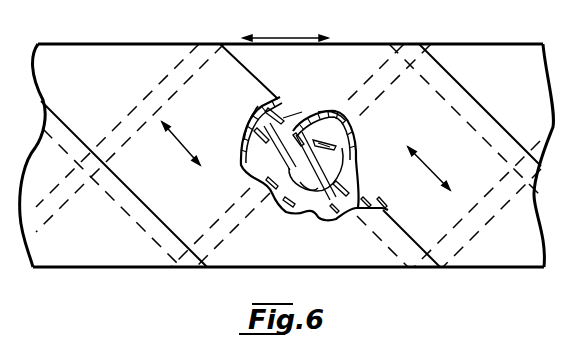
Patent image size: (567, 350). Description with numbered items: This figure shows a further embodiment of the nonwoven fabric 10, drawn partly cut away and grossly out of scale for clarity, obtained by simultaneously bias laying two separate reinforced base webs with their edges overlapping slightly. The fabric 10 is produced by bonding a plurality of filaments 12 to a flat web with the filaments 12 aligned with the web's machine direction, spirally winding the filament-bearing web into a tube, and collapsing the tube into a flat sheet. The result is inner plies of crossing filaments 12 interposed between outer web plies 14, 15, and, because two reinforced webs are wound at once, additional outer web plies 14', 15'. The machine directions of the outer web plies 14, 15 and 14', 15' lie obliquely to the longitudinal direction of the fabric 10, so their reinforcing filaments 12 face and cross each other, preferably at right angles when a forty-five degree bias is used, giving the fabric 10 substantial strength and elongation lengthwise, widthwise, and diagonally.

The nonwoven fabric 10 is at (207, 277).
The filaments 12 is at (349, 146).
The outer web ply 14 is at (278, 102).
The outer web ply 14' is at (337, 88).
The outer web ply 15 is at (311, 120).
The outer web ply 15' is at (298, 211).